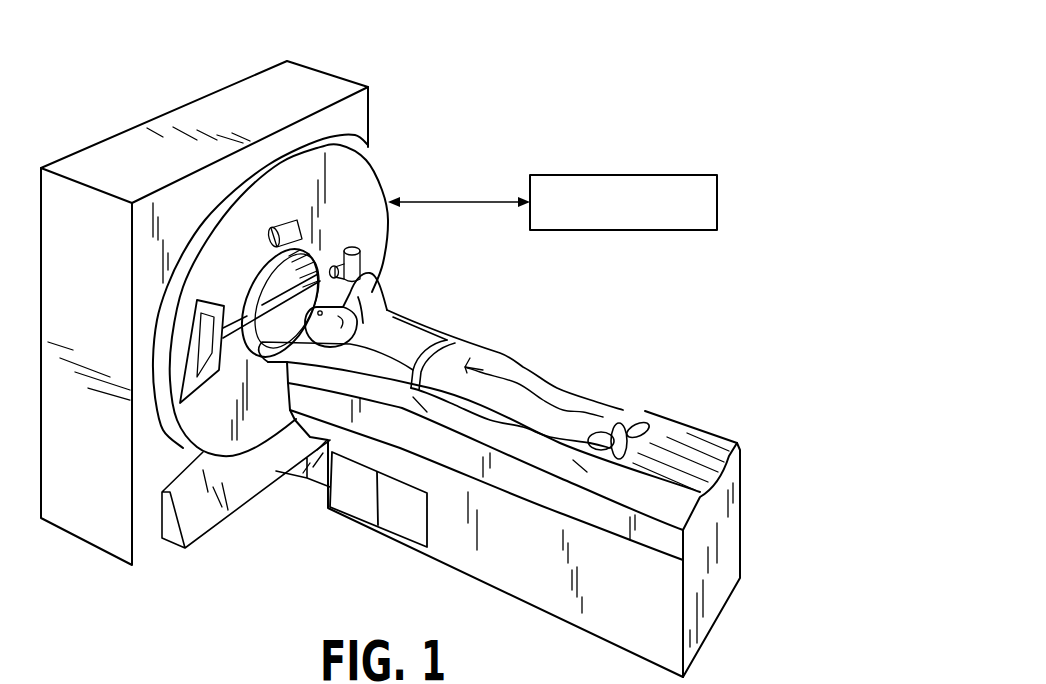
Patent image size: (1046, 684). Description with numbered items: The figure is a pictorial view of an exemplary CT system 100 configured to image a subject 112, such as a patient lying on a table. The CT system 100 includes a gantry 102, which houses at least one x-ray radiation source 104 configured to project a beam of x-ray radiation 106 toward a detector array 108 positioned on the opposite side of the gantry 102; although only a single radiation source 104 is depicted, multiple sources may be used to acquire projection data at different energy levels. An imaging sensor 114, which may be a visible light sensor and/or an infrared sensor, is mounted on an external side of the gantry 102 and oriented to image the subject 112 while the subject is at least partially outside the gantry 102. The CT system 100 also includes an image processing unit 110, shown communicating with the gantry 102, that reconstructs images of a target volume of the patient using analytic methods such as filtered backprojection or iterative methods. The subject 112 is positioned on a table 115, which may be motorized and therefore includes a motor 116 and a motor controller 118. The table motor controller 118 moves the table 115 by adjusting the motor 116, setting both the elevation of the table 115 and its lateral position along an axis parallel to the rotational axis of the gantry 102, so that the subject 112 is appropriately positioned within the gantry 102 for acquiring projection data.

The CT system 100 is at (665, 43).
The gantry 102 is at (366, 204).
The x-ray radiation source 104 is at (358, 264).
The beam of x-ray radiation 106 is at (251, 317).
The detector array 108 is at (205, 376).
The image processing unit 110 is at (677, 175).
The subject 112 is at (400, 330).
The imaging sensor 114 is at (287, 221).
The table 115 is at (727, 443).
The motor 116 is at (372, 514).
The motor controller 118 is at (416, 533).